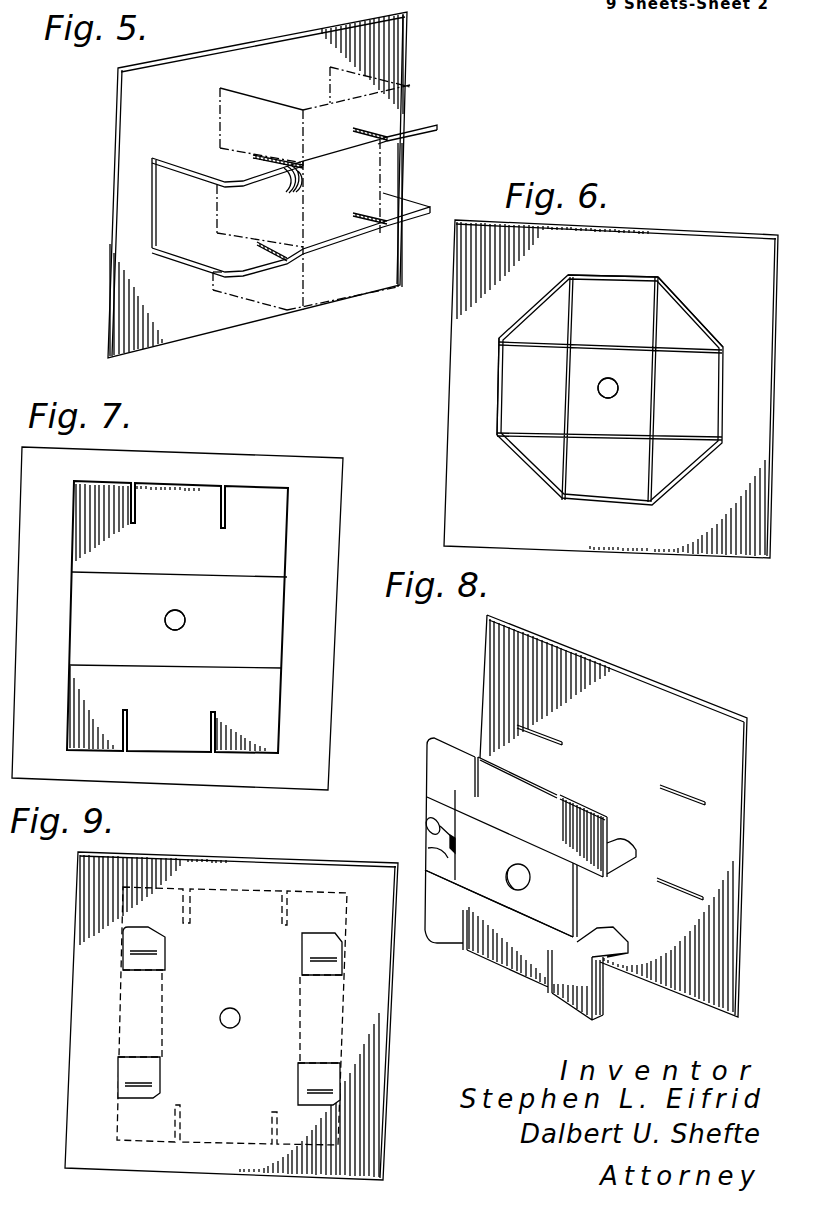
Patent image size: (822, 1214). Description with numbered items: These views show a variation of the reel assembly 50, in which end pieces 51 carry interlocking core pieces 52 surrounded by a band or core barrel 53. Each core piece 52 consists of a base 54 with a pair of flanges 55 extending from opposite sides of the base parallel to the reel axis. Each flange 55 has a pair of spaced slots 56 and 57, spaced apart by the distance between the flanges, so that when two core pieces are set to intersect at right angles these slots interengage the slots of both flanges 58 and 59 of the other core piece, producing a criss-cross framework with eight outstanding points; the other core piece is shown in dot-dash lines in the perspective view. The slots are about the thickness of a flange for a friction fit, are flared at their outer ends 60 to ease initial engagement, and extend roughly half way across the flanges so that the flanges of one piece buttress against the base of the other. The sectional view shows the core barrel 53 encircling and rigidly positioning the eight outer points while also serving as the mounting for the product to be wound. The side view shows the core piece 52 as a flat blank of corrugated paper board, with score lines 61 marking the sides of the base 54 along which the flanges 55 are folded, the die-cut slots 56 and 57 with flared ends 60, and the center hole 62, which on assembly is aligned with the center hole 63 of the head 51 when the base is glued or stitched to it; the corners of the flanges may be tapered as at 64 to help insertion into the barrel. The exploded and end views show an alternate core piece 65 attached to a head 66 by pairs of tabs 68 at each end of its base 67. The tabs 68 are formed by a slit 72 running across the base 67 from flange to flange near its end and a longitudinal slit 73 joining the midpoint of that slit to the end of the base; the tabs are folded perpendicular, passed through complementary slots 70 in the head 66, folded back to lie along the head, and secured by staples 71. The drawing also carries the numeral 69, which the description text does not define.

In FIG. 5, the reel assembly 50 is at (413, 78).
In FIG. 6, the reel assembly 50 is at (452, 337).
In FIG. 5, the end piece 51 is at (395, 48).
In FIG. 6, the end piece 51 is at (748, 252).
In FIG. 7, the end piece 51 is at (308, 473).
In FIG. 6, the core piece 52 is at (703, 400).
In FIG. 7, the core piece 52 is at (283, 572).
In FIG. 6, the core barrel 53 is at (662, 315).
In FIG. 5, the base 54 is at (373, 167).
In FIG. 6, the base 54 is at (510, 388).
In FIG. 7, the base 54 is at (268, 620).
In FIG. 5, the flange 55 is at (420, 123).
In FIG. 6, the flange 55 is at (572, 330).
In FIG. 7, the flange 55 is at (278, 540).
In FIG. 5, the slot 56 is at (253, 153).
In FIG. 6, the slot 56 is at (573, 340).
In FIG. 7, the slot 56 is at (138, 507).
In FIG. 5, the slot 57 is at (357, 127).
In FIG. 6, the slot 57 is at (658, 350).
In FIG. 7, the slot 57 is at (227, 507).
In FIG. 6, the flange 58 is at (582, 315).
In FIG. 6, the flange 59 is at (667, 302).
In FIG. 5, the flared outer end 60 is at (413, 136).
In FIG. 6, the flared outer end 60 is at (663, 343).
In FIG. 7, the flared outer end 60 is at (138, 483).
In FIG. 7, the score line 61 is at (217, 575).
In FIG. 5, the center hole 62 is at (300, 180).
In FIG. 6, the center hole 62 is at (605, 382).
In FIG. 7, the center hole 62 is at (183, 617).
In FIG. 5, the center hole 63 is at (287, 183).
In FIG. 6, the center hole 63 is at (608, 388).
In FIG. 7, the center hole 63 is at (175, 620).
In FIG. 5, the tapered corner 64 is at (223, 273).
In FIG. 6, the tapered corner 64 is at (503, 343).
In FIG. 7, the tapered corner 64 is at (82, 482).
In FIG. 8, the core piece 65 is at (533, 813).
In FIG. 9, the core piece 65 is at (210, 973).
In FIG. 8, the head 66 is at (683, 717).
In FIG. 9, the head 66 is at (380, 1037).
In FIG. 8, the base 67 is at (560, 913).
In FIG. 9, the base 67 is at (283, 1037).
In FIG. 8, the tab 68 is at (442, 818).
In FIG. 9, the tab 68 is at (162, 942).
In FIG. 8, the fold line 69 is at (610, 818).
In FIG. 9, the fold line 69 is at (232, 895).
In FIG. 8, the slot 70 is at (543, 735).
In FIG. 9, the slot 70 is at (132, 973).
In FIG. 9, the staple 71 is at (142, 950).
In FIG. 8, the slit 72 is at (458, 870).
In FIG. 8, the slit 73 is at (462, 594).